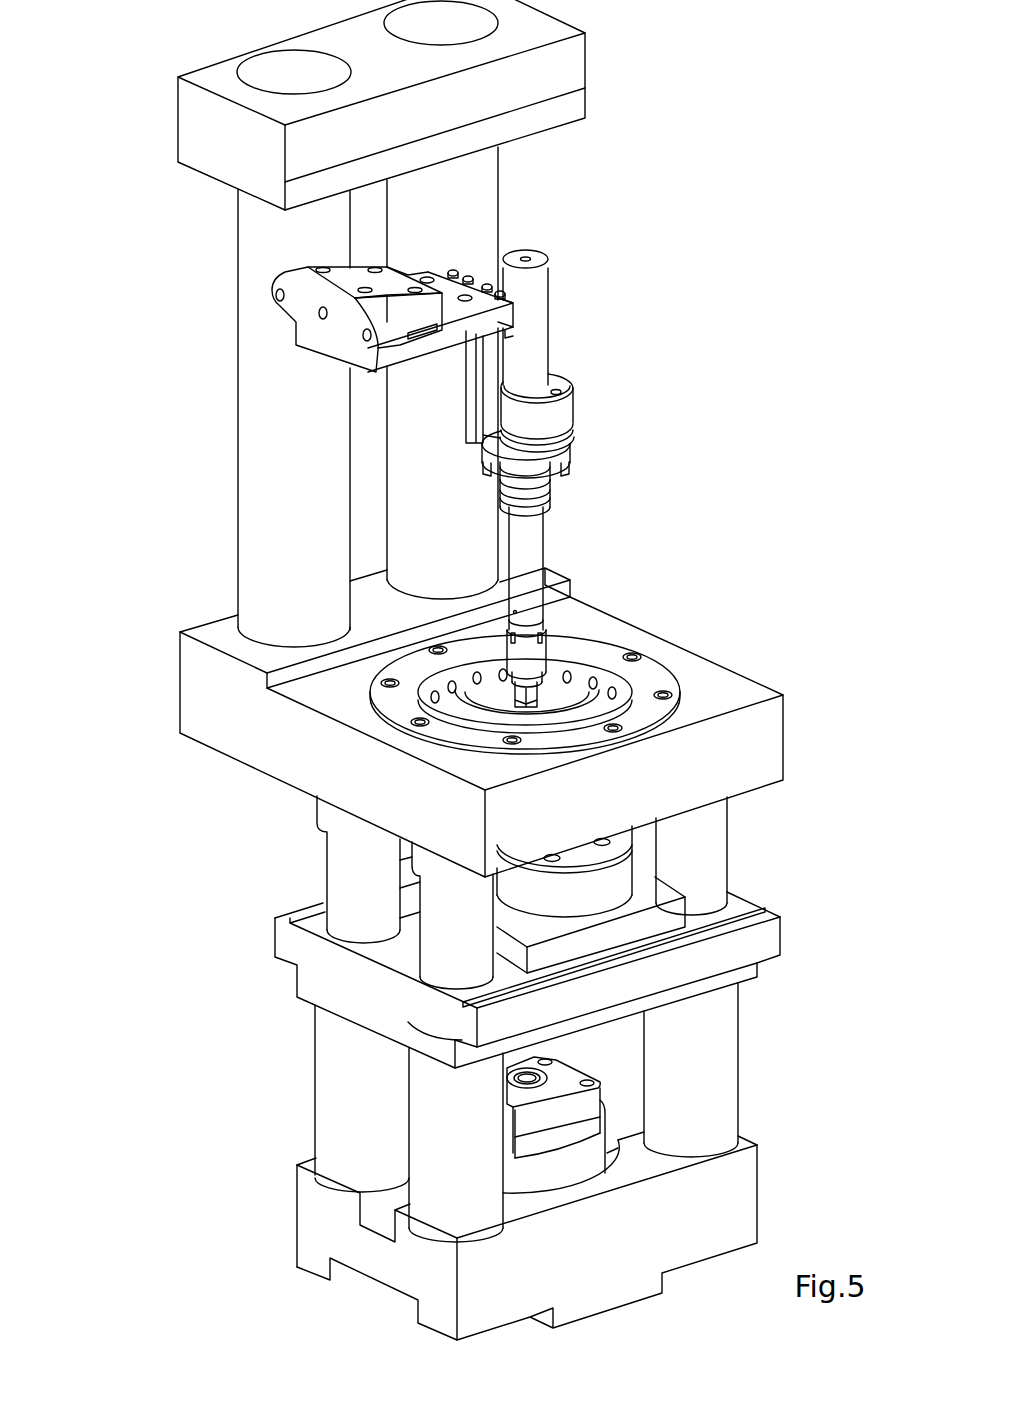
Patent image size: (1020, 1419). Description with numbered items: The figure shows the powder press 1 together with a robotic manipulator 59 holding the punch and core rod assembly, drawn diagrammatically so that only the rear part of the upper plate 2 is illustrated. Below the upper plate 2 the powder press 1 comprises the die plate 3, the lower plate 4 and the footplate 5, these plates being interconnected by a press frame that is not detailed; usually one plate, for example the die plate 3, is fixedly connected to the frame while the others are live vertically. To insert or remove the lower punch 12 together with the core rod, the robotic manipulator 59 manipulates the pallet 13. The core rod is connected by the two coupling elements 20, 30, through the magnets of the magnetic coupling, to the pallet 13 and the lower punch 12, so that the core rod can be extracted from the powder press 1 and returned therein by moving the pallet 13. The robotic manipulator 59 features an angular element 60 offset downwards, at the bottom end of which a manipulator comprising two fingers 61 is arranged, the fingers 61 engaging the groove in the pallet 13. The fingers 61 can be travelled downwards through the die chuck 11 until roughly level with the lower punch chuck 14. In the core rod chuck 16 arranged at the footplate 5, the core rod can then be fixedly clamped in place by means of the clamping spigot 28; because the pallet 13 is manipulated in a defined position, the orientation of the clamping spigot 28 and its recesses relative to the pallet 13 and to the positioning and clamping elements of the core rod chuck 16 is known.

The powder press 1 is at (505, 670).
The upper plate 2 is at (574, 73).
The die plate 3 is at (773, 740).
The lower plate 4 is at (763, 933).
The footplate 5 is at (742, 1185).
The die chuck 11 is at (607, 648).
The lower punch 12 is at (557, 294).
The pallet 13 is at (571, 451).
The lower punch chuck 14 is at (603, 865).
The core rod chuck 16 is at (563, 1075).
The coupling element 20 is at (548, 553).
The clamping spigot 28 is at (526, 708).
The coupling element 30 is at (565, 490).
The robotic manipulator 59 is at (316, 378).
The angular element 60 is at (473, 400).
The fingers 61 is at (583, 437).